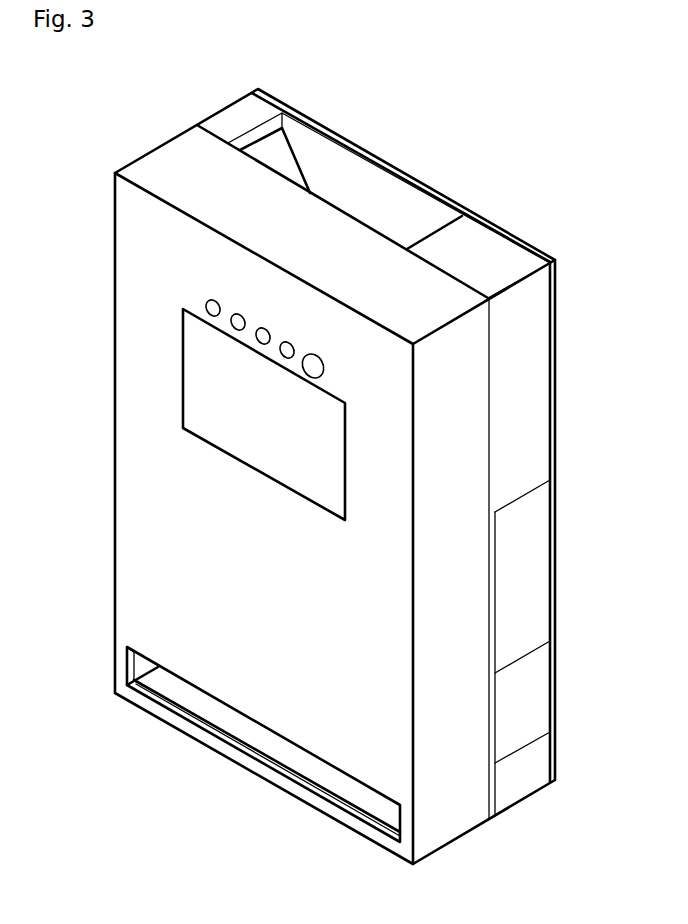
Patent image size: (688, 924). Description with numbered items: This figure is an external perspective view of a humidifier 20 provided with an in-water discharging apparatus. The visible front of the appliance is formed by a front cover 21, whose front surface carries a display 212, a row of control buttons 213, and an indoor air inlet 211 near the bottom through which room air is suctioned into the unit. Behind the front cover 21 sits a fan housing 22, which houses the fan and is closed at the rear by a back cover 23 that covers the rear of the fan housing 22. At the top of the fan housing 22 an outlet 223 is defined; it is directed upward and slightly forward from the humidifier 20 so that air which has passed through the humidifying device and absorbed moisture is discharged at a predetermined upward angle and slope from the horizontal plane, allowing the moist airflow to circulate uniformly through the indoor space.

The humidifier 20 is at (478, 152).
The front cover 21 is at (163, 162).
The fan housing 22 is at (237, 120).
The outlet 223 is at (362, 190).
The back cover 23 is at (557, 360).
The display 212 is at (195, 392).
The control buttons 213 is at (313, 355).
The indoor air inlet 211 is at (245, 733).